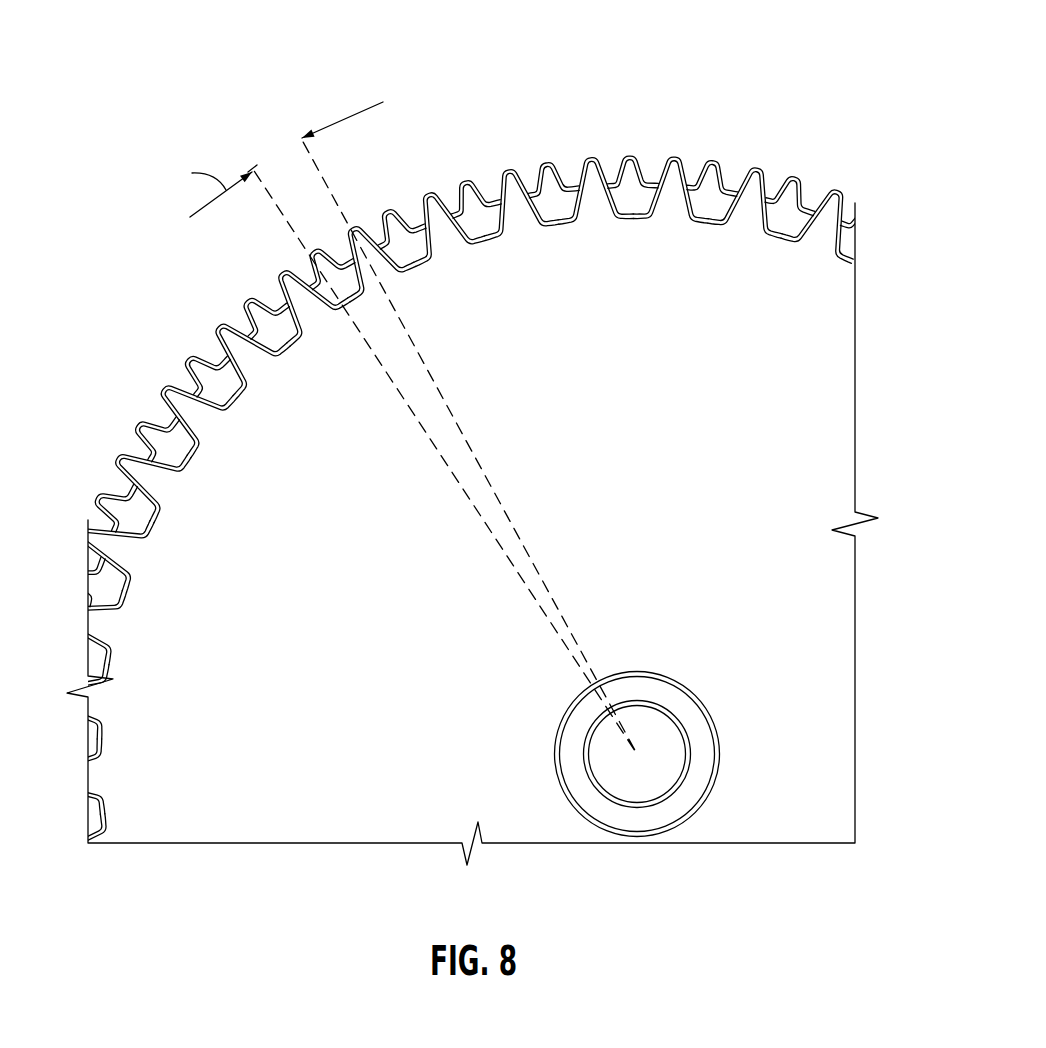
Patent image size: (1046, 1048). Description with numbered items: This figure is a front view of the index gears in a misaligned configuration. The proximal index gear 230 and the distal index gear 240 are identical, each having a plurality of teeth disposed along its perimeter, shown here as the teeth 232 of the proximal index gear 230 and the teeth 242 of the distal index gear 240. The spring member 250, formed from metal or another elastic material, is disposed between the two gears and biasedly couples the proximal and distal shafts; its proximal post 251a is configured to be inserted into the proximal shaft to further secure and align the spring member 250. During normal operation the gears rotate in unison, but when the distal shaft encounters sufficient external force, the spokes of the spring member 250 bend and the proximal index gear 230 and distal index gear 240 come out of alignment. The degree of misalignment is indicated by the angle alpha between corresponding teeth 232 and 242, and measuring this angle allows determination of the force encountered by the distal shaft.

The proximal index gear 230 is at (845, 357).
The teeth 232 is at (438, 194).
The distal index gear 240 is at (706, 160).
The teeth 242 is at (456, 78).
The spring member 250 is at (793, 205).
The proximal post 251a is at (665, 757).